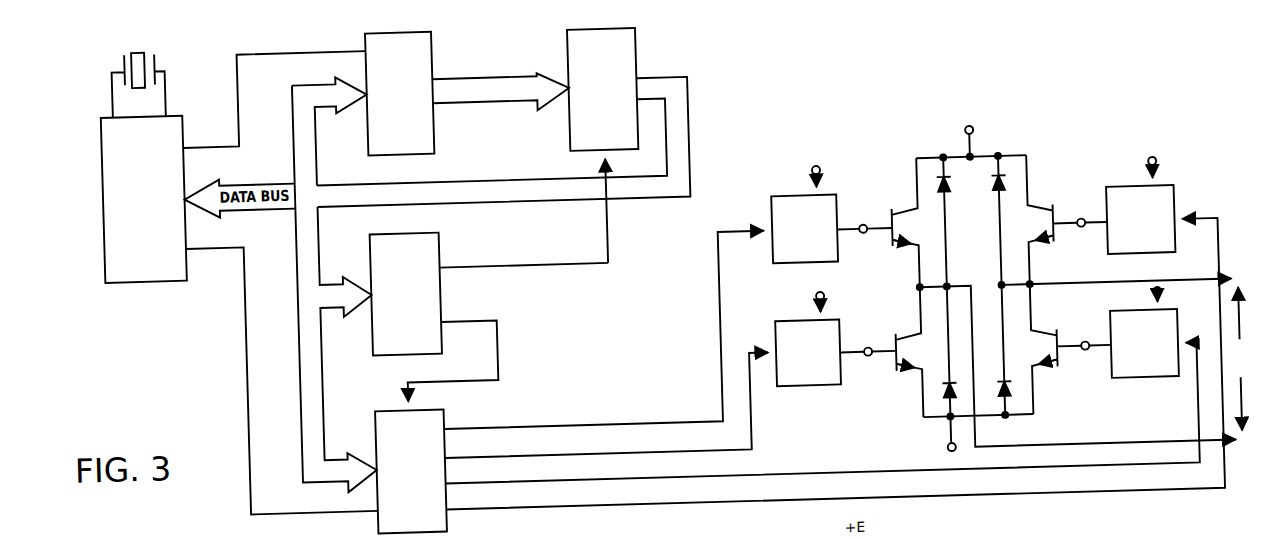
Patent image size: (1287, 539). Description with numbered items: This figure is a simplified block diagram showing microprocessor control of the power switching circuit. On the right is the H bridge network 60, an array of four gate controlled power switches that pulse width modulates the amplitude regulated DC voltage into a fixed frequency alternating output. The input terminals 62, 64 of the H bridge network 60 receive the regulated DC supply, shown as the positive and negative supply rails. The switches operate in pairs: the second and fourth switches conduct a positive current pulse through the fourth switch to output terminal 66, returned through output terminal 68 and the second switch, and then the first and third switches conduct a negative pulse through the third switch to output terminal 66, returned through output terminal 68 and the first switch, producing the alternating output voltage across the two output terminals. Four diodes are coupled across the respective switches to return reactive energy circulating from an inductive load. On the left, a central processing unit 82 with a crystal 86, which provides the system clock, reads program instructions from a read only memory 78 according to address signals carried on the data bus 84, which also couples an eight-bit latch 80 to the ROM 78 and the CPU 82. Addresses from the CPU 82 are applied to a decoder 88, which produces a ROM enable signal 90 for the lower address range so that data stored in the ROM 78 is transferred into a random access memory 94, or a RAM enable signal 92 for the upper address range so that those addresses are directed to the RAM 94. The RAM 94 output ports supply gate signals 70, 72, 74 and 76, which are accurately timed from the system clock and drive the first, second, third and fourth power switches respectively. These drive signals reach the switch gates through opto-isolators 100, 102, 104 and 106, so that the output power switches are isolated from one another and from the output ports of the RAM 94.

The H bridge network 60 is at (1064, 273).
The input terminal 62 is at (973, 152).
The input terminal 64 is at (946, 441).
The output terminal 66 is at (1040, 289).
The output terminal 68 is at (958, 287).
The gate signal 70 is at (543, 424).
The gate signal 72 is at (575, 452).
The gate signal 74 is at (609, 478).
The gate signal 76 is at (647, 504).
The read only memory 78 is at (642, 45).
The 8-bit latch 80 is at (438, 40).
The central processing unit 82 is at (106, 120).
The data bus 84 is at (528, 176).
The crystal 86 is at (118, 58).
The decoder 88 is at (440, 241).
The ROM enable signal 90 is at (609, 255).
The RAM enable signal 92 is at (496, 330).
The random access memory 94 is at (372, 518).
The opto-isolator 100 is at (774, 203).
The opto-isolator 102 is at (774, 330).
The opto-isolator 104 is at (1176, 212).
The opto-isolator 106 is at (1112, 392).